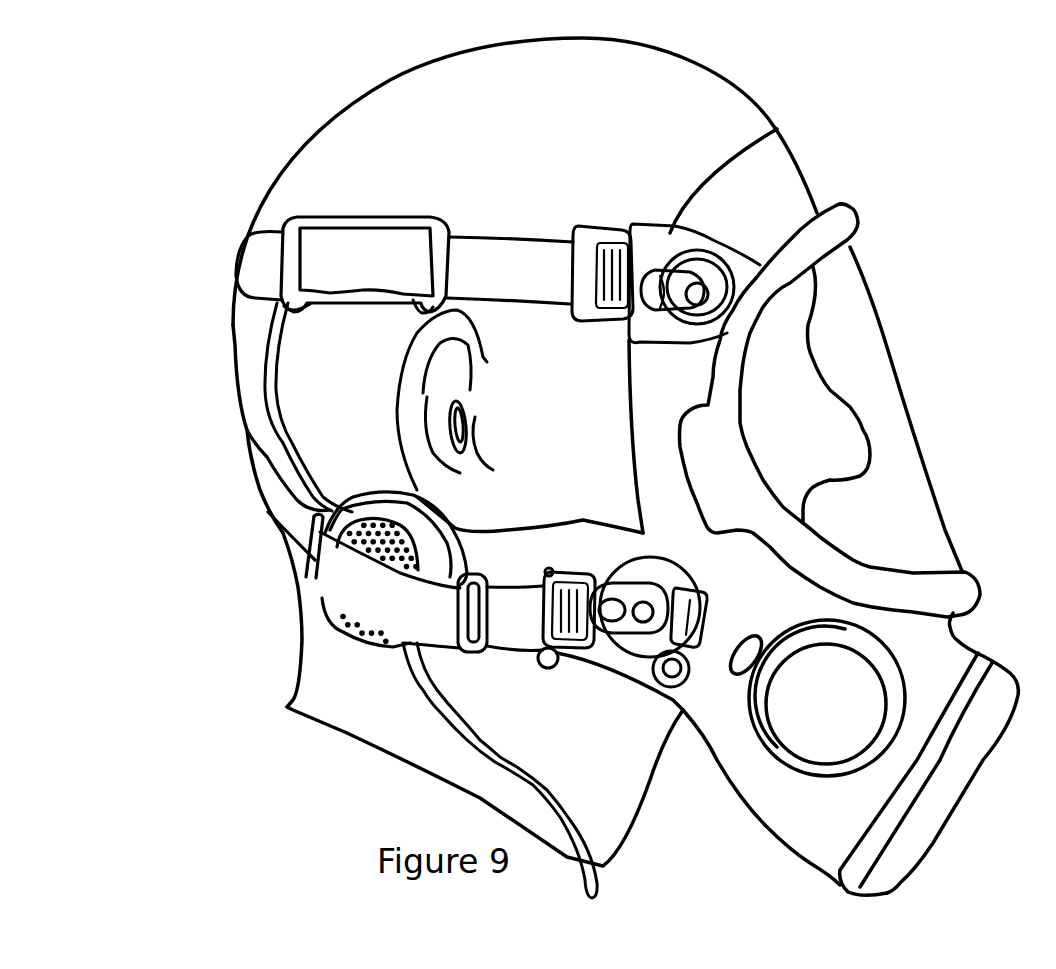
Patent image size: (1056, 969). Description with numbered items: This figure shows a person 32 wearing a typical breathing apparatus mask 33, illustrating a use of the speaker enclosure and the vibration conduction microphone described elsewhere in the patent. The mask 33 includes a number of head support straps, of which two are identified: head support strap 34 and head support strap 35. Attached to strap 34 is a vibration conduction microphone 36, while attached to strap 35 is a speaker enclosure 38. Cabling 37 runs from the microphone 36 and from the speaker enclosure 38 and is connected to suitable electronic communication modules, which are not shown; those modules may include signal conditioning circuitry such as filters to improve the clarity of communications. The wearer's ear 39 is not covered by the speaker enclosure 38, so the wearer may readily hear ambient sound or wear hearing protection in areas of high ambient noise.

The person 32 is at (480, 112).
The breathing apparatus mask 33 is at (763, 187).
The head support strap 34 is at (253, 267).
The head support strap 35 is at (283, 508).
The vibration conduction microphone 36 is at (323, 222).
The cabling 37 is at (270, 395).
The speaker enclosure 38 is at (330, 627).
The ear 39 is at (477, 407).